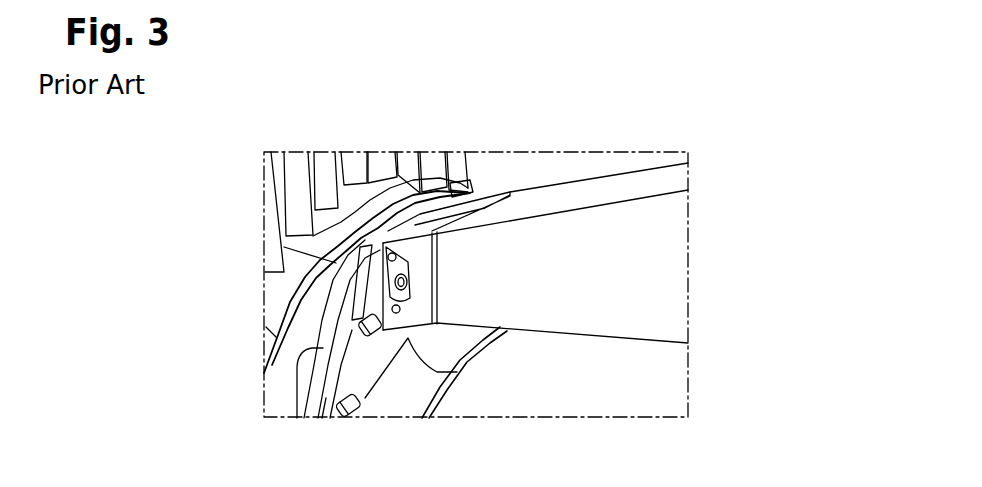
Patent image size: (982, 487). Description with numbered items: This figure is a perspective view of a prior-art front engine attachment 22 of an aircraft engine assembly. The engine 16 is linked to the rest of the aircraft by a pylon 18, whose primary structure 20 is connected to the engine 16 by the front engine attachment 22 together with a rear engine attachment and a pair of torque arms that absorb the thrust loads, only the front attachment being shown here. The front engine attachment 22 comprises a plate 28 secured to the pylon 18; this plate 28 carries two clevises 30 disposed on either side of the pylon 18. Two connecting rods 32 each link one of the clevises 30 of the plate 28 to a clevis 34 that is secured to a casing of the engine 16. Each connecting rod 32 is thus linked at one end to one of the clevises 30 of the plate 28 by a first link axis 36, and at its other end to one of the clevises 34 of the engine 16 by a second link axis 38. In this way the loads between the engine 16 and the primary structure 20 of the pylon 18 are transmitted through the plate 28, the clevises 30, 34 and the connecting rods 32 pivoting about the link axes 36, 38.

The engine 16 is at (457, 400).
The pylon 18 is at (575, 181).
The primary structure 20 is at (623, 313).
The front engine attachment 22 is at (362, 159).
The plate 28 is at (403, 204).
The clevis 30 is at (346, 280).
The connecting rod 32 is at (297, 384).
The clevis 34 is at (325, 405).
The first link axis 36 is at (392, 338).
The second link axis 38 is at (373, 408).